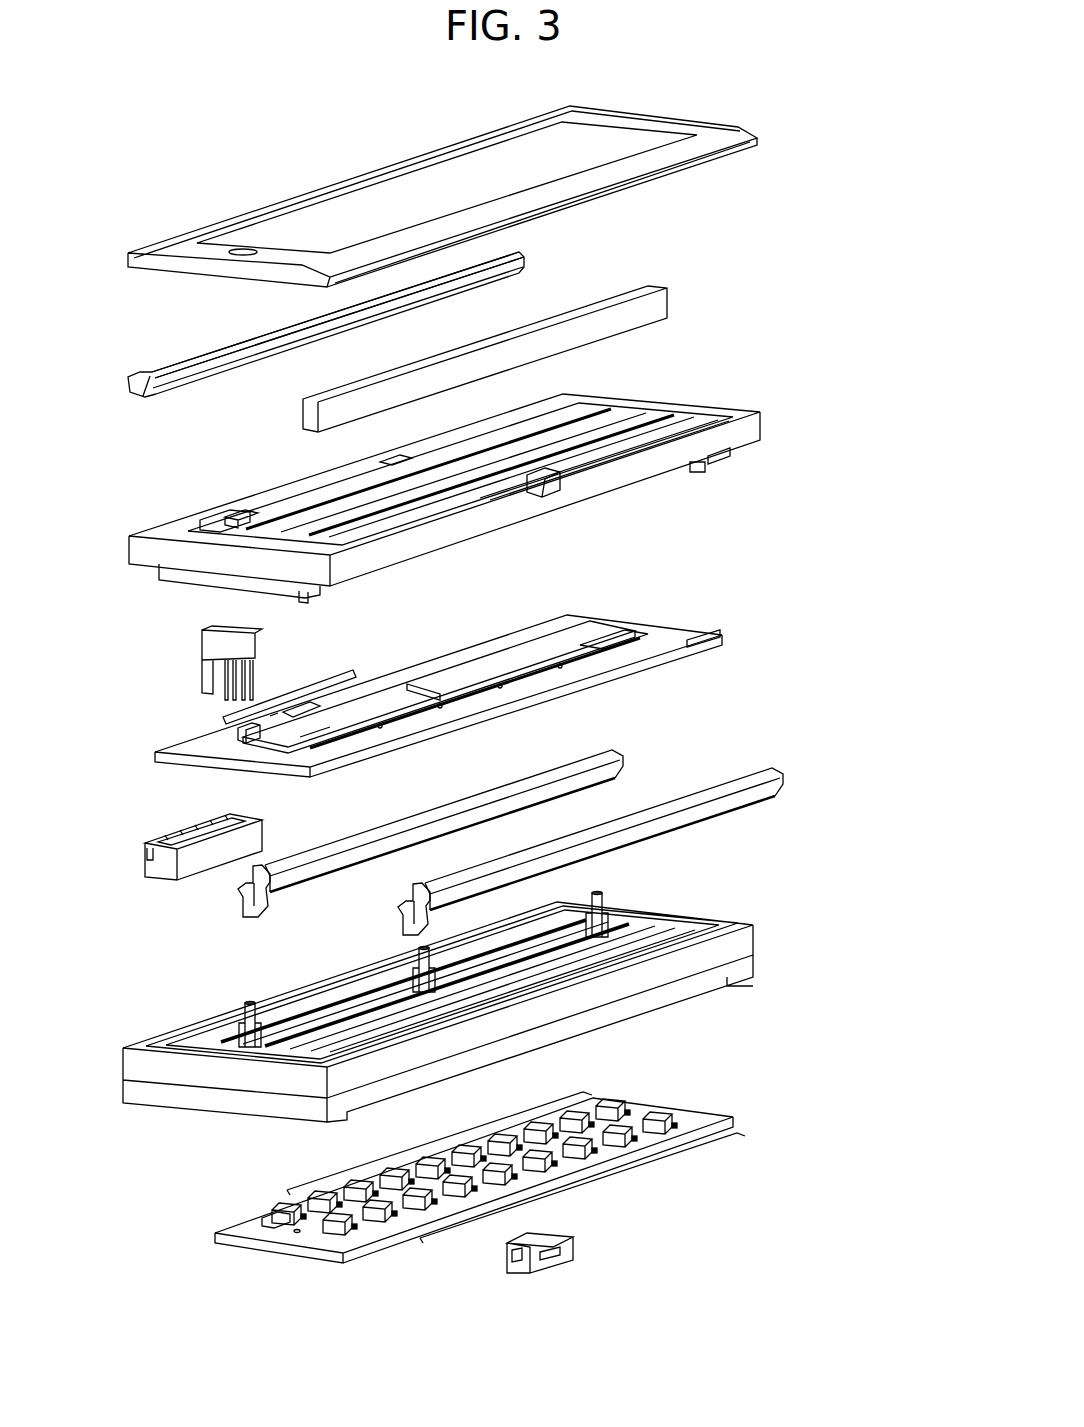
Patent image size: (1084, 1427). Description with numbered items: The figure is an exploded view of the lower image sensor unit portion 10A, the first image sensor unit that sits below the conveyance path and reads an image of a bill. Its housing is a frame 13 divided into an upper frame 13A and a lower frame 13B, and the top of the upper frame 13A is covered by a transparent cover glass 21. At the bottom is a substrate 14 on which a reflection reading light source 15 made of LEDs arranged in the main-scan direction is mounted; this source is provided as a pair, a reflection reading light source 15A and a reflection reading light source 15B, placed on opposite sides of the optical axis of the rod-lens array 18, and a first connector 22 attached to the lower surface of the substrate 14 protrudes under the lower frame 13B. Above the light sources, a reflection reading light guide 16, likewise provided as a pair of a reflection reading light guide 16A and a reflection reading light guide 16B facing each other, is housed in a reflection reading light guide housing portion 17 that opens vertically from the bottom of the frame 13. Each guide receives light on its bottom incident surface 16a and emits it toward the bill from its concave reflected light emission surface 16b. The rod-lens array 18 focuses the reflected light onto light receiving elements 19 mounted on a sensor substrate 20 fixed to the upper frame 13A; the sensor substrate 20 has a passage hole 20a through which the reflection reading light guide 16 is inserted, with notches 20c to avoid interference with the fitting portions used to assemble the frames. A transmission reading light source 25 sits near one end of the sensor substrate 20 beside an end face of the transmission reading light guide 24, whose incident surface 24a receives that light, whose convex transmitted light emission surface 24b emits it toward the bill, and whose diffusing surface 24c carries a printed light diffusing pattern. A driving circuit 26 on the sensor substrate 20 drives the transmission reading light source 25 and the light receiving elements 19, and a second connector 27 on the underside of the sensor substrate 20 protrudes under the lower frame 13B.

The lower image sensor unit portion 10A is at (442, 179).
The cover glass 21 is at (650, 133).
The transmission reading light guide 24 is at (319, 361).
The incident surface 24a is at (145, 396).
The transmitted light emission surface 24b is at (215, 354).
The diffusing surface 24c is at (204, 382).
The rod-lens array 18 is at (672, 296).
The frame 13 is at (511, 738).
The upper frame 13A is at (728, 410).
The lower frame 13B is at (511, 987).
The sensor substrate 20 is at (447, 667).
The passage hole 20a is at (600, 640).
The notches 20c is at (425, 687).
The light receiving element 19 is at (600, 652).
The transmission reading light source 25 is at (200, 640).
The driving circuit 26 is at (287, 690).
The second connector 27 is at (145, 868).
The reflection reading light guide 16 is at (512, 867).
The reflection reading light guide 16A is at (772, 768).
The reflection reading light guide 16B is at (238, 903).
The incident surface 16a is at (410, 937).
The reflected light emission surface 16b is at (512, 846).
The reflection reading light guide housing portion 17 is at (627, 905).
The substrate 14 is at (466, 1196).
The reflection reading light source 15 is at (508, 1167).
The reflection reading light source 15A is at (578, 1190).
The reflection reading light source 15B is at (448, 1135).
The first connector 22 is at (557, 1272).